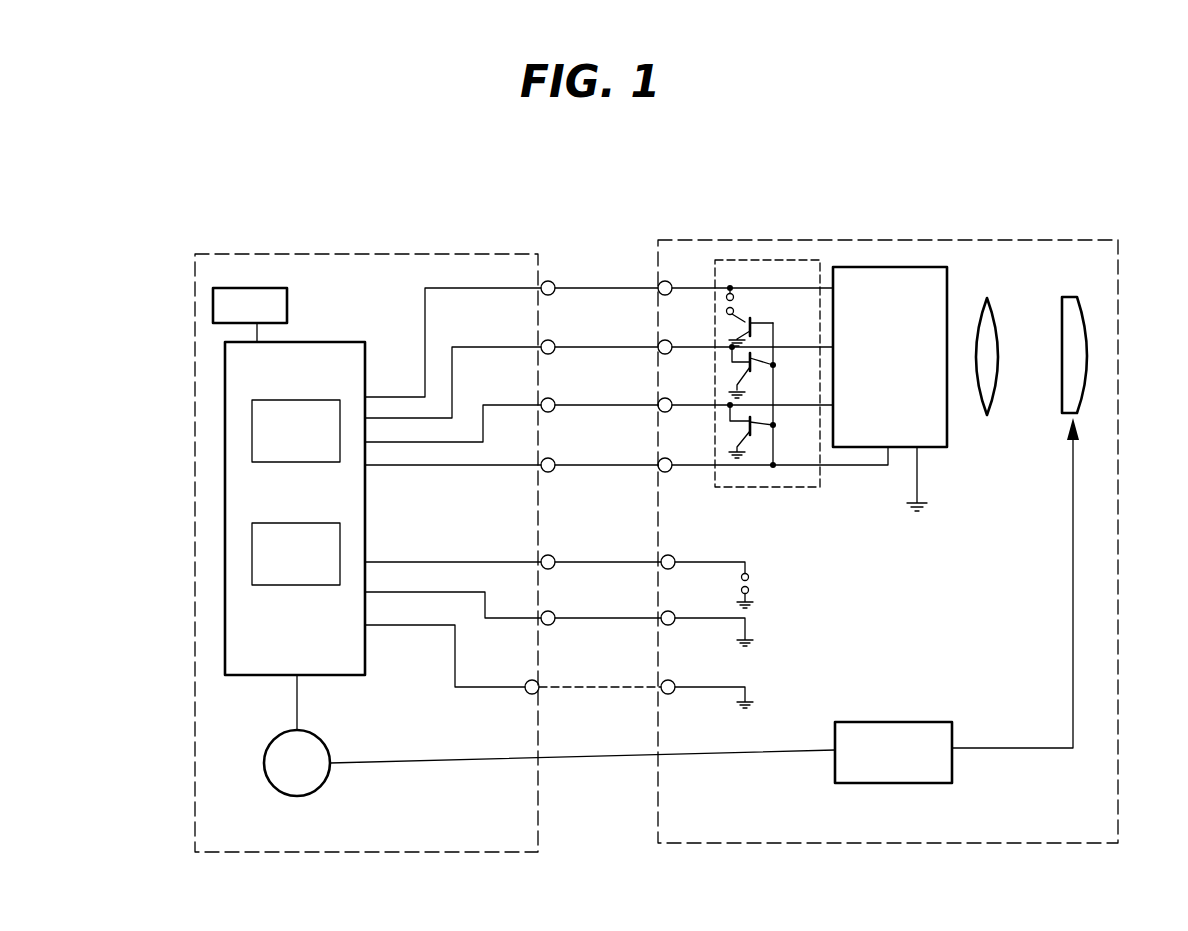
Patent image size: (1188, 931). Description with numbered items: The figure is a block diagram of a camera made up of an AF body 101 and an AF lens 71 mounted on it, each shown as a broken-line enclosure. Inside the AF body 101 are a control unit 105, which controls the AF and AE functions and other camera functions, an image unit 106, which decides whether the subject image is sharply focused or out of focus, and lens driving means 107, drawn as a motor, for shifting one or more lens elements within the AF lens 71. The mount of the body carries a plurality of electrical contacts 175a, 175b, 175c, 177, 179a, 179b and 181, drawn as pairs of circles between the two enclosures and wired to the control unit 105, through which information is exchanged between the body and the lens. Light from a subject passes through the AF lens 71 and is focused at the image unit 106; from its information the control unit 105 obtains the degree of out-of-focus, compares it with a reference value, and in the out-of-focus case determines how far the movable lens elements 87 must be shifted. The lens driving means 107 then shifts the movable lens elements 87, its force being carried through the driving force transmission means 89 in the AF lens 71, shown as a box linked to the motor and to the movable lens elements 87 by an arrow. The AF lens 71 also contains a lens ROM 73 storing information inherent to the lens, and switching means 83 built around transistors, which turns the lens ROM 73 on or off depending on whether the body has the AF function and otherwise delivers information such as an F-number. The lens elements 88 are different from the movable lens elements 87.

The AF body 101 is at (407, 256).
The image unit 106 is at (227, 288).
The control unit 105 is at (312, 342).
The lens driving means 107 is at (307, 795).
The electrical contact 175a is at (599, 326).
The electrical contact 175b is at (599, 365).
The electrical contact 175c is at (599, 407).
The electrical contact 177 is at (626, 451).
The electrical contact 179a is at (559, 568).
The electrical contact 179b is at (559, 615).
The electrical contact 181 is at (559, 666).
The AF lens 71 is at (998, 241).
The switching means 83 is at (780, 260).
The lens ROM 73 is at (947, 284).
The lens elements 88 is at (992, 313).
The movable lens elements 87 is at (1092, 330).
The driving force transmission means 89 is at (835, 722).